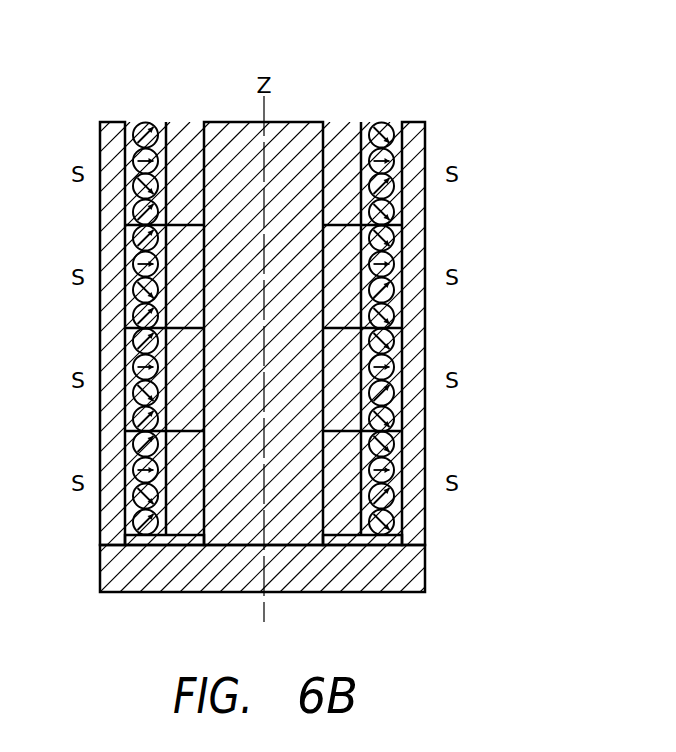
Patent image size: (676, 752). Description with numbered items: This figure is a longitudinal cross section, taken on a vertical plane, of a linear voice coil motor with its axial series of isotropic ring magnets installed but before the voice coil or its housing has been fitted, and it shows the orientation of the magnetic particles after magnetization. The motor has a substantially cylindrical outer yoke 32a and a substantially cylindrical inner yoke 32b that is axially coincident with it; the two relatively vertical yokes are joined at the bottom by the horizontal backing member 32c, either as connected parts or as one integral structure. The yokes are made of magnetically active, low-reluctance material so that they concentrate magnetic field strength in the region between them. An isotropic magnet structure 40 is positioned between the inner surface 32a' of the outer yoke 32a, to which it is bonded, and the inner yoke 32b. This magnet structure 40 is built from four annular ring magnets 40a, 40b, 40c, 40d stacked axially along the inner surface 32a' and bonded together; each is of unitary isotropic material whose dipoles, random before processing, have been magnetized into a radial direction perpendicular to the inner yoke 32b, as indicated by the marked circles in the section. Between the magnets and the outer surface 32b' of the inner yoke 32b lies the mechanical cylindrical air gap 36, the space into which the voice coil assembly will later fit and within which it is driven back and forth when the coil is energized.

The outer yoke 32a is at (291, 304).
The inner surface of the outer yoke 32a' is at (76, 321).
The inner yoke 32b is at (278, 282).
The outer surface of the inner yoke 32b' is at (214, 284).
The backing member 32c is at (185, 585).
The mechanical cylindrical air gap 36 is at (400, 118).
The isotropic magnet structure 40 is at (144, 121).
The ring magnet 40a is at (405, 205).
The ring magnet 40b is at (405, 308).
The ring magnet 40c is at (405, 411).
The ring magnet 40d is at (405, 514).